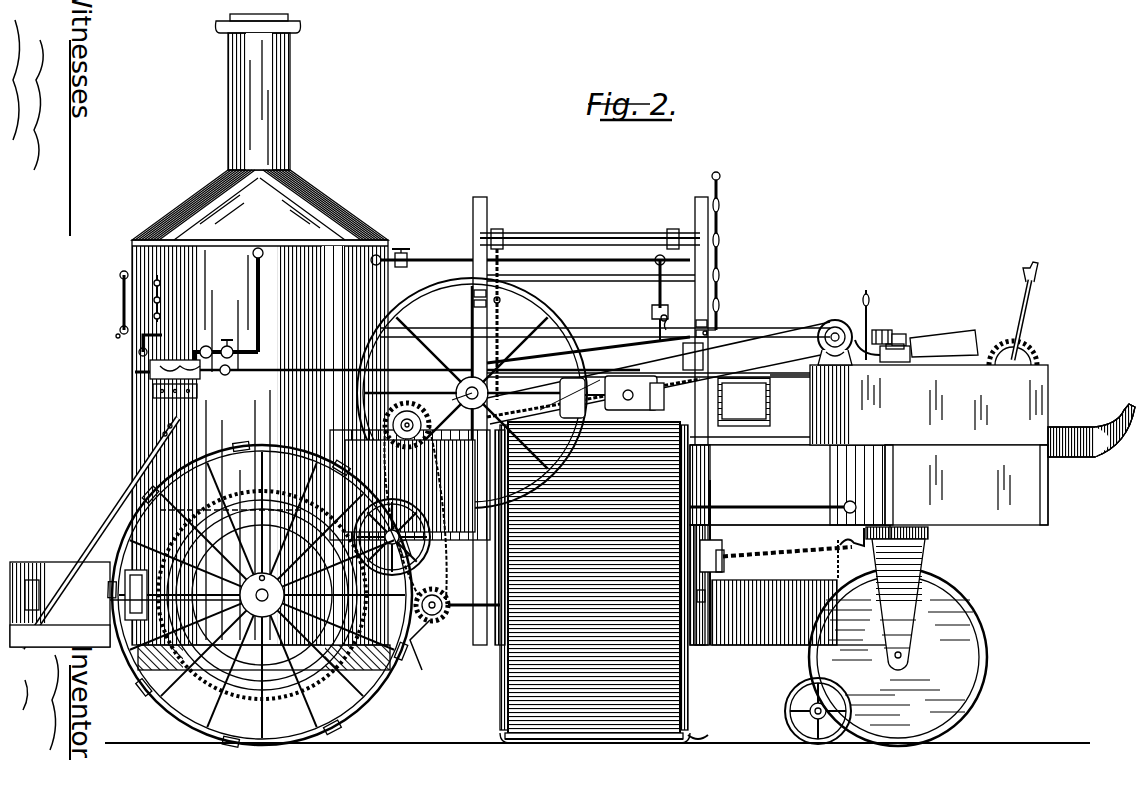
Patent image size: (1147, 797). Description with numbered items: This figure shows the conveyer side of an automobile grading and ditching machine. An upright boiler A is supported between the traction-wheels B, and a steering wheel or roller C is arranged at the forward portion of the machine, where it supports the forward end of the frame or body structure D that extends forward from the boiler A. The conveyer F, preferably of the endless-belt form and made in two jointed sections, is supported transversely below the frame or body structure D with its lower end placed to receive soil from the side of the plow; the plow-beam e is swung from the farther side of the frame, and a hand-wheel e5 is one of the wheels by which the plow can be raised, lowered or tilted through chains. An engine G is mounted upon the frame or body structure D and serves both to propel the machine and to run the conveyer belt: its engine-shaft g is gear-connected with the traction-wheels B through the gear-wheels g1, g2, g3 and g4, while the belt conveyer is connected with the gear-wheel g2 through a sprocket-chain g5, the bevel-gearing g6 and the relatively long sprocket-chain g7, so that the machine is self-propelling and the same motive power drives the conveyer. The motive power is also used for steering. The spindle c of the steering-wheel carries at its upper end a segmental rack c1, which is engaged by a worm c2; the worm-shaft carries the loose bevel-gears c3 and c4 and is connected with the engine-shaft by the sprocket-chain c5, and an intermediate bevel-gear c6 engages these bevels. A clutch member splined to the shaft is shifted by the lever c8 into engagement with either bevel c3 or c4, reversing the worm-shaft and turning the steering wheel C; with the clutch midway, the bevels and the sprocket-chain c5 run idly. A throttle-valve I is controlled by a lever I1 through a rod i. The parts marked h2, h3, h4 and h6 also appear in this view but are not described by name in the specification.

The upright boiler A is at (350, 228).
The traction-wheels B is at (245, 450).
The steering wheel or roller C is at (898, 636).
The frame or body structure D is at (869, 541).
The conveyer F is at (604, 582).
The engine G is at (744, 402).
The throttle-valve I is at (668, 318).
The lever I1 is at (1020, 297).
The spindle of the steering-wheel c is at (903, 340).
The segmental rack c1 is at (880, 330).
The worm c2 is at (776, 552).
The bevel-gear c3 is at (852, 543).
The bevel-gear c4 is at (834, 318).
The sprocket-chain c5 is at (786, 362).
The intermediate bevel-gear c6 is at (836, 556).
The lever c8 is at (966, 358).
The plow-beam e is at (734, 584).
The hand-wheel e5 is at (872, 309).
The engine-shaft g is at (466, 378).
The gear-wheel g1 is at (452, 400).
The gear-wheel g2 is at (385, 420).
The gear-wheel g3 is at (235, 512).
The gear-wheel g4 is at (172, 548).
The sprocket-chain g5 is at (430, 670).
The bevel-gearing g6 is at (448, 625).
The relatively long sprocket-chain g7 is at (500, 560).
The chain h2 is at (505, 282).
The lever h3 is at (708, 330).
The rod h4 is at (720, 222).
The bracket h6 is at (700, 602).
The rod i is at (898, 334).